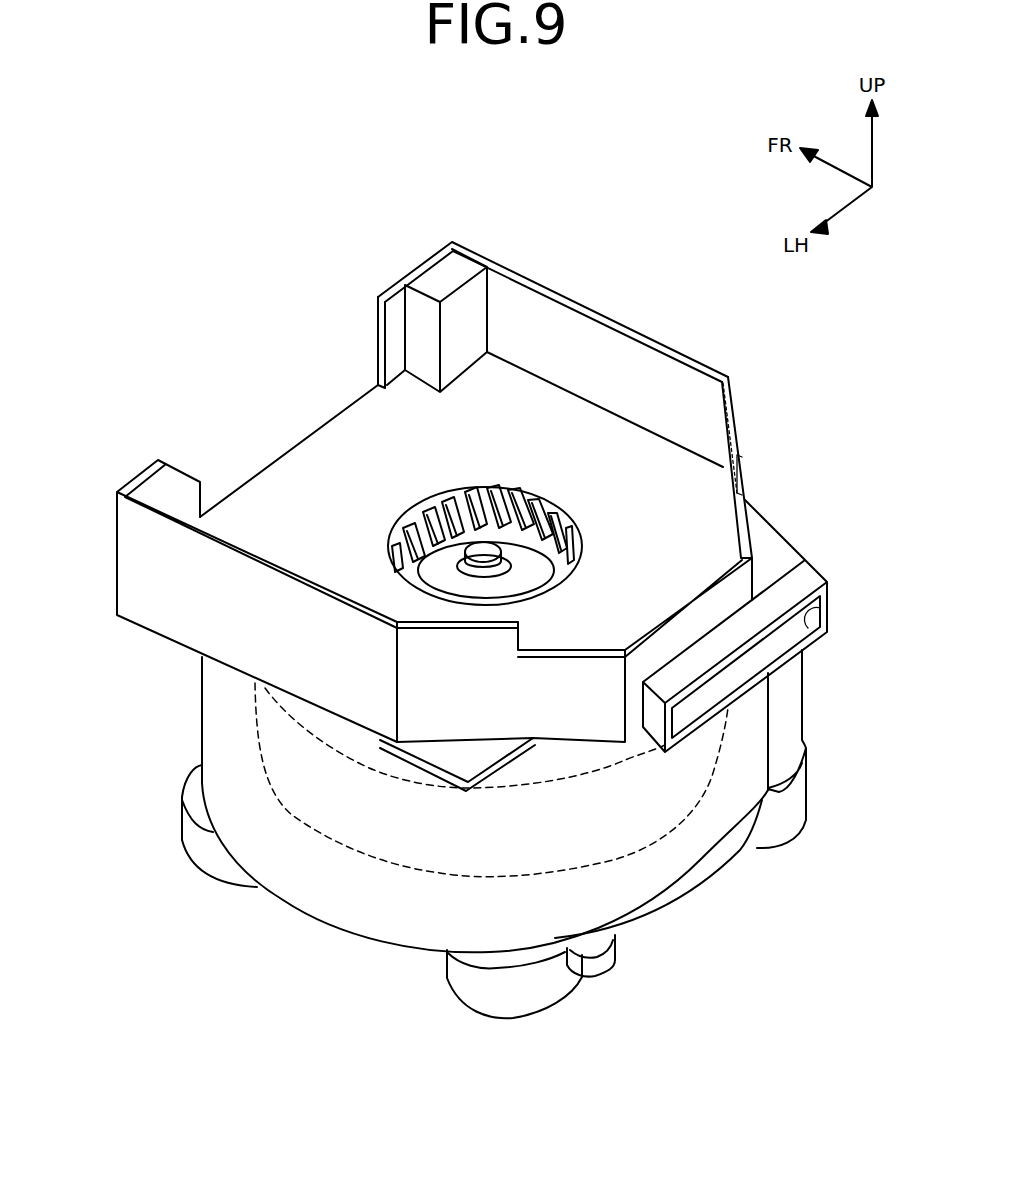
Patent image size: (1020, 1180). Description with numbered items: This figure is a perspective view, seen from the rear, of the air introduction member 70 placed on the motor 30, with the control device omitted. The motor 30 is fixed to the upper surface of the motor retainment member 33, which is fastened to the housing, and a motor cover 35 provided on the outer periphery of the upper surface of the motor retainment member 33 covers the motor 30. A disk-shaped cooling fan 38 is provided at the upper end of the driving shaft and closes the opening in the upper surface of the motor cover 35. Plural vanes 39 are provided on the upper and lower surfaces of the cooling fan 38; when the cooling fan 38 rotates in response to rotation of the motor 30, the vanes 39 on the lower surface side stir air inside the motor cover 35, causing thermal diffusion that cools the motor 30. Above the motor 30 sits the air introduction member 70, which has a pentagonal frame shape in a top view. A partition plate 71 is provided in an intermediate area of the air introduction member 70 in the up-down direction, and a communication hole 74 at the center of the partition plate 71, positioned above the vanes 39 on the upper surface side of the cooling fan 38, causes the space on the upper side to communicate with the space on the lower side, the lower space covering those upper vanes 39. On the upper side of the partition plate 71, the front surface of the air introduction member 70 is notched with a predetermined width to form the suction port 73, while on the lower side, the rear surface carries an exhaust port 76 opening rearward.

The motor 30 is at (540, 834).
The motor retainment member 33 is at (793, 798).
The motor cover 35 is at (783, 692).
The cooling fan 38 is at (525, 586).
The vanes 39 is at (498, 512).
The air introduction member 70 is at (215, 597).
The partition plate 71 is at (638, 498).
The suction port 73 is at (377, 343).
The communication hole 74 is at (552, 507).
The exhaust port 76 is at (820, 633).